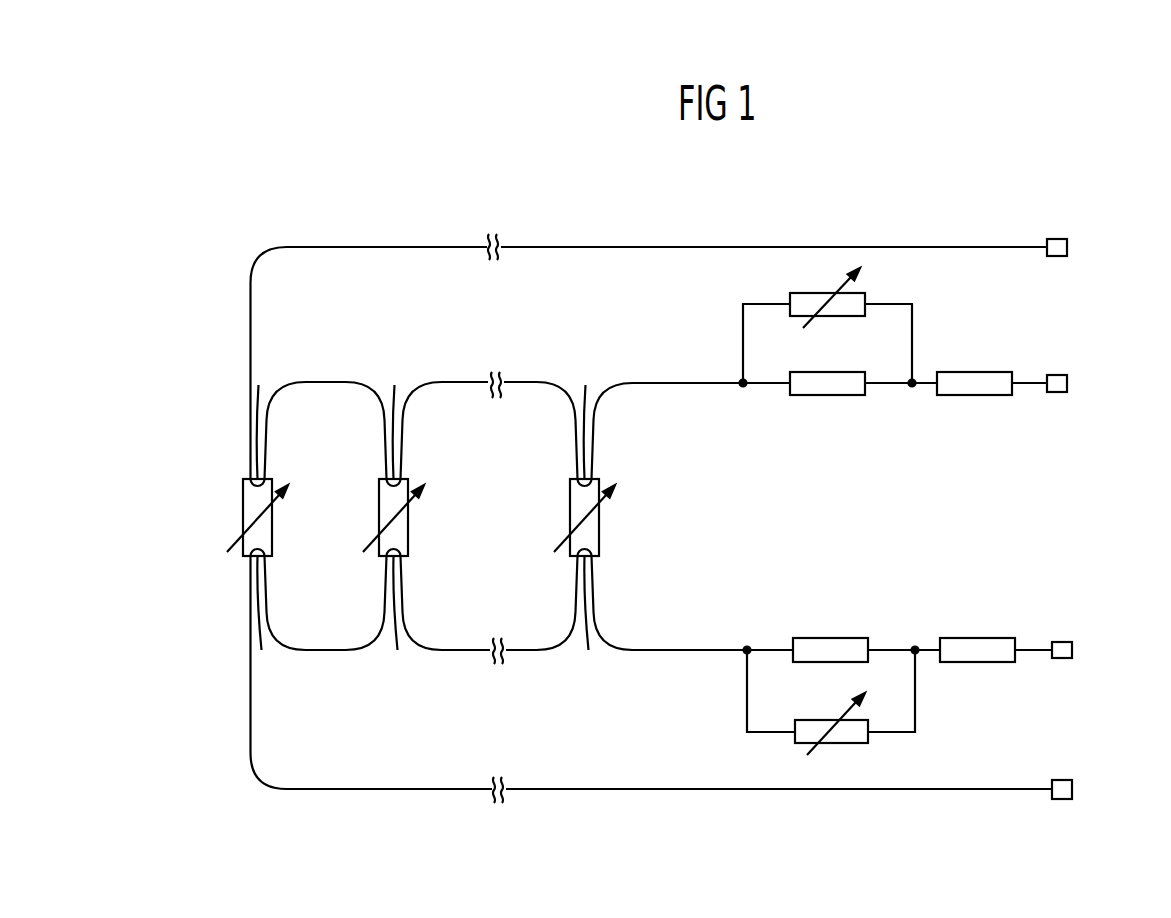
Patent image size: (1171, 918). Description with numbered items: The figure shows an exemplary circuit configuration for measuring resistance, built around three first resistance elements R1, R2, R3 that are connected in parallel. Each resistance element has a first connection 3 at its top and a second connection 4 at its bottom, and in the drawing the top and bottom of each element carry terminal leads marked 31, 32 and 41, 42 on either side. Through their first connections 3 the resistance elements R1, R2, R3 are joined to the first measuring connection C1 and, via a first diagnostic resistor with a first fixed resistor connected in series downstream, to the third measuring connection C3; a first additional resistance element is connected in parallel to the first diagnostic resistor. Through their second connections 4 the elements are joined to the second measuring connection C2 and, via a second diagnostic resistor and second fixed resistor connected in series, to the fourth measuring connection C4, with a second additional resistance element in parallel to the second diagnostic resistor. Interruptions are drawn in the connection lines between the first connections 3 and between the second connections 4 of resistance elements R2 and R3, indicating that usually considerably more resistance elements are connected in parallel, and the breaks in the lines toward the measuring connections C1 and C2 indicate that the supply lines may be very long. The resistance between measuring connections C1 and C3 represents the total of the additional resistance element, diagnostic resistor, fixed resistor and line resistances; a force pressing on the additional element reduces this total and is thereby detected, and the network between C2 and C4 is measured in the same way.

The first connection 3 is at (422, 417).
The second connection 4 is at (426, 618).
The first terminal of resistor 31 is at (574, 477).
The second terminal of resistor 32 is at (594, 477).
The third terminal of resistor 41 is at (594, 559).
The fourth terminal of resistor 42 is at (574, 559).
The first resistance element R1 is at (272, 513).
The first resistance element R2 is at (408, 513).
The first resistance element R3 is at (599, 513).
The first measuring connection C1 is at (1067, 247).
The second measuring connection C2 is at (1072, 789).
The third measuring connection C3 is at (1067, 383).
The fourth measuring connection C4 is at (1072, 650).